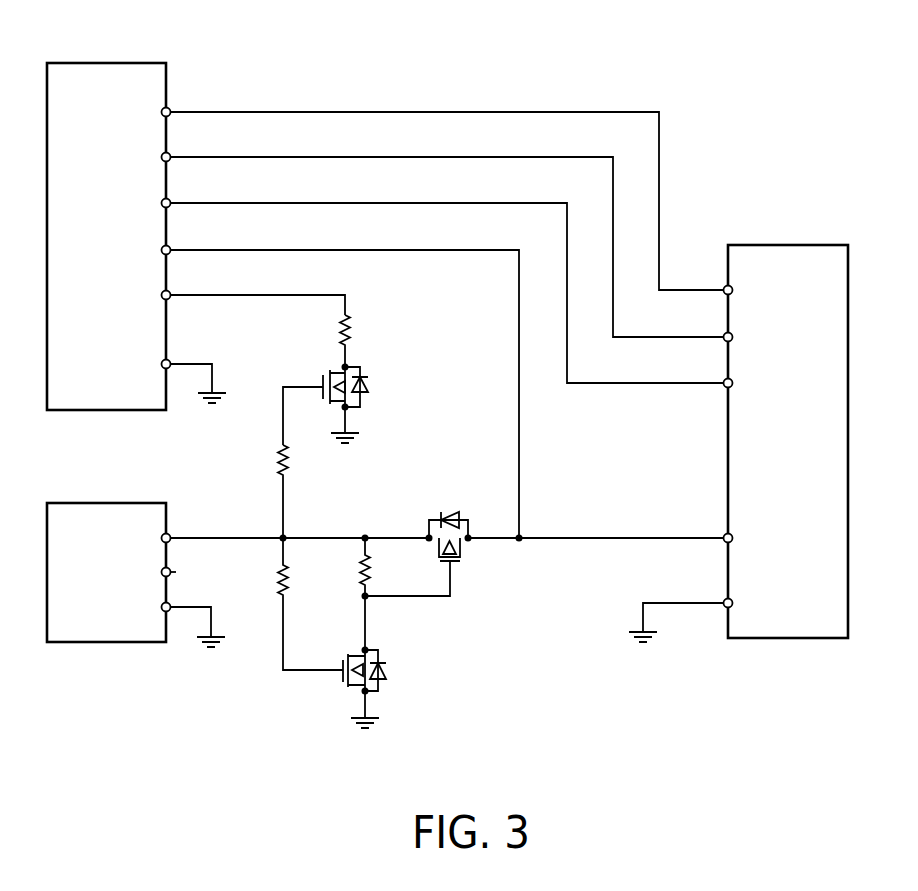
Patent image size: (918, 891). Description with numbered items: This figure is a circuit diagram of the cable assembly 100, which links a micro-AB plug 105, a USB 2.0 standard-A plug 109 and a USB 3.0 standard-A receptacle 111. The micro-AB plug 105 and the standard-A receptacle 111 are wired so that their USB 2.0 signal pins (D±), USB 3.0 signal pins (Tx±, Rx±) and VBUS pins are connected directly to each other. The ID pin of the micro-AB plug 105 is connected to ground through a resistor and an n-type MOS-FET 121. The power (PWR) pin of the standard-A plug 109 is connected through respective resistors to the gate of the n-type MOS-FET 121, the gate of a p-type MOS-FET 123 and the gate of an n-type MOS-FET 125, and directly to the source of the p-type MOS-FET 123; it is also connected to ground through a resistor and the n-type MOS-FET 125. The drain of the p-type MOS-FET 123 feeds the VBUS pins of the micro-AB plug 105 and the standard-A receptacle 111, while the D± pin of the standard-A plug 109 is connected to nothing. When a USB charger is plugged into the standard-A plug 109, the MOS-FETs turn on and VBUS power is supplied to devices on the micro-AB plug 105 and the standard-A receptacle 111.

The cable assembly 100 is at (742, 110).
The micro-AB plug 105 is at (166, 63).
The USB 2.0 standard-A plug 109 is at (166, 503).
The USB 3.0 standard-A receptacle 111 is at (785, 638).
The n-type MOS-FET 121 is at (362, 367).
The p-type MOS-FET 123 is at (446, 510).
The n-type MOS-FET 125 is at (380, 652).